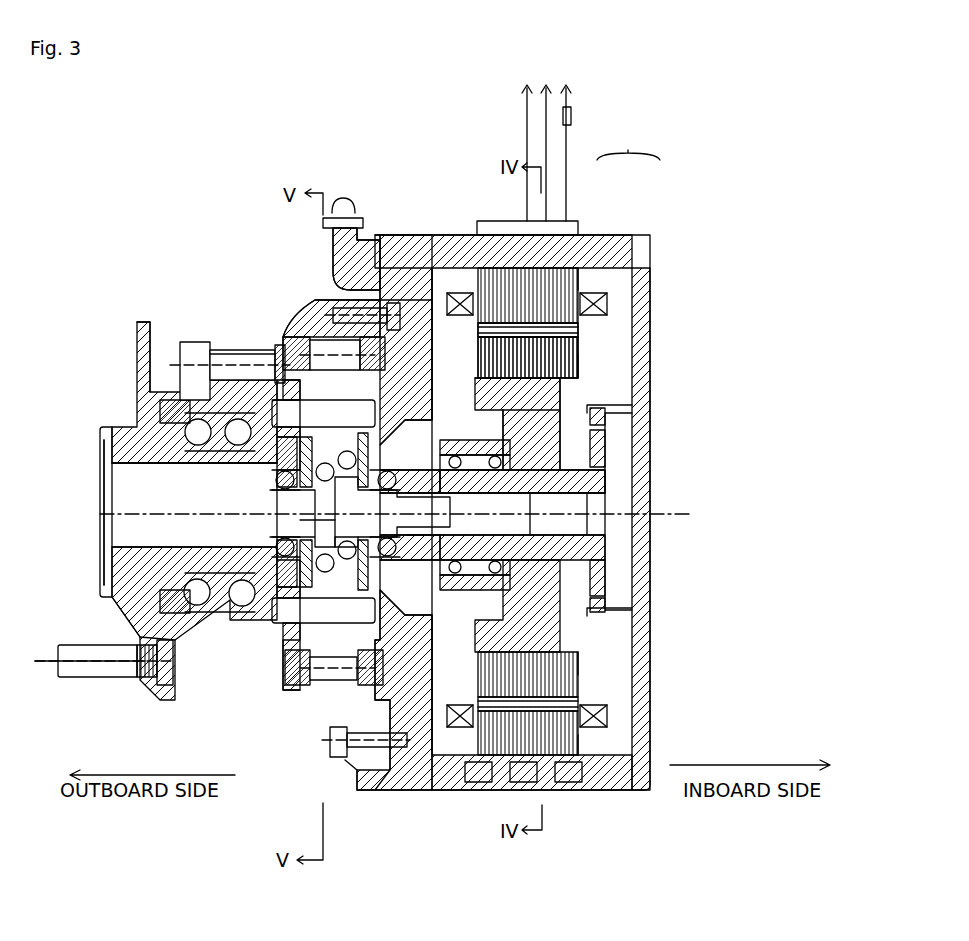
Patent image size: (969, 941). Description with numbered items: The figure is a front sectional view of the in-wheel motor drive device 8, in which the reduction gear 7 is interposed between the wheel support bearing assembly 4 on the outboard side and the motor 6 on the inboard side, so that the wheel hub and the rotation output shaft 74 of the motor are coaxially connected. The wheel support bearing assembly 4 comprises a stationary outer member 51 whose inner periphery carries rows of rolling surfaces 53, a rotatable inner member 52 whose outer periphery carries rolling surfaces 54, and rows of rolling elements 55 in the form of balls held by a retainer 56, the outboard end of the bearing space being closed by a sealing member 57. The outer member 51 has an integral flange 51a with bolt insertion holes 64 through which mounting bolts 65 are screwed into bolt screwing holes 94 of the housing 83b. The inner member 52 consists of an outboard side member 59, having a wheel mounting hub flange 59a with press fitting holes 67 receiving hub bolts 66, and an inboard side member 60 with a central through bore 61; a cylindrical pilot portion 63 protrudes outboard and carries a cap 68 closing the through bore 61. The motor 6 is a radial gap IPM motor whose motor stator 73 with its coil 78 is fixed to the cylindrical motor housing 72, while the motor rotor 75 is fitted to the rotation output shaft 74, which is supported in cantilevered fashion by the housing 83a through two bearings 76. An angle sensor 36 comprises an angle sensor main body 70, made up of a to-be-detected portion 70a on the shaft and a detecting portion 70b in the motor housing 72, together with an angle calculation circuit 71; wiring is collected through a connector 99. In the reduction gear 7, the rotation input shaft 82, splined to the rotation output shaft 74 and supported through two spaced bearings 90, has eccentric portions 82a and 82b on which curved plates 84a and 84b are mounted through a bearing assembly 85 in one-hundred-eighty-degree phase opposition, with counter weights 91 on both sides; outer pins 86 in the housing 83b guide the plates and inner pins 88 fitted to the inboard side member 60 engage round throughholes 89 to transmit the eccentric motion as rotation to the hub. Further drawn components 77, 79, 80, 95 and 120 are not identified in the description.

The wheel support bearing assembly 4 is at (277, 183).
The motor 6 is at (670, 808).
The reduction gear 7 is at (410, 183).
The in-wheel motor drive device 8 is at (430, 98).
The angle sensor 36 is at (748, 305).
The outer member 51 is at (182, 400).
The flange 51a is at (238, 350).
The inner member 52 is at (48, 445).
The rolling surfaces 53 is at (230, 605).
The rolling surfaces 54 is at (240, 560).
The rolling elements 55 is at (210, 480).
The retainer 56 is at (155, 617).
The sealing member 57 is at (140, 598).
The outboard side member 59 is at (150, 440).
The wheel mounting hub flange 59a is at (145, 325).
The inboard side member 60 is at (190, 480).
The through bore 61 is at (155, 545).
The pilot portion 63 is at (100, 435).
The bolt insertion hole 64 is at (185, 400).
The mounting bolt 65 is at (198, 342).
The hub bolt 66 is at (95, 660).
The press fitting hole 67 is at (150, 665).
The cap 68 is at (100, 548).
The angle sensor main body 70 is at (664, 475).
The to-be-detected portion 70a is at (615, 440).
The detecting portion 70b is at (618, 400).
The angle calculation circuit 71 is at (571, 118).
The motor housing 72 is at (460, 235).
The motor stator 73 is at (628, 145).
The rotation output shaft 74 is at (620, 570).
The motor rotor 75 is at (470, 393).
The bearings 76 is at (470, 598).
The stator coil 77 is at (580, 280).
The coil 78 is at (612, 298).
The rotor core 79 is at (490, 360).
The permanent magnet 80 is at (495, 330).
The rotation input shaft 82 is at (590, 560).
The eccentric portion 82a is at (345, 497).
The eccentric portion 82b is at (350, 520).
The housing 83a is at (403, 370).
The housing 83b is at (330, 405).
The curved plate 84a is at (355, 640).
The curved plate 84b is at (350, 660).
The bearing assembly 85 is at (295, 600).
The outer pins 86 is at (343, 350).
The inner pins 88 is at (292, 395).
The round throughholes 89 is at (340, 370).
The bearings 90 is at (432, 590).
The counter weights 91 is at (296, 462).
The bolt screwing hole 94 is at (262, 350).
The sensor 95 is at (478, 782).
The connector 99 is at (500, 221).
The wheel mounting flange 120 is at (148, 330).